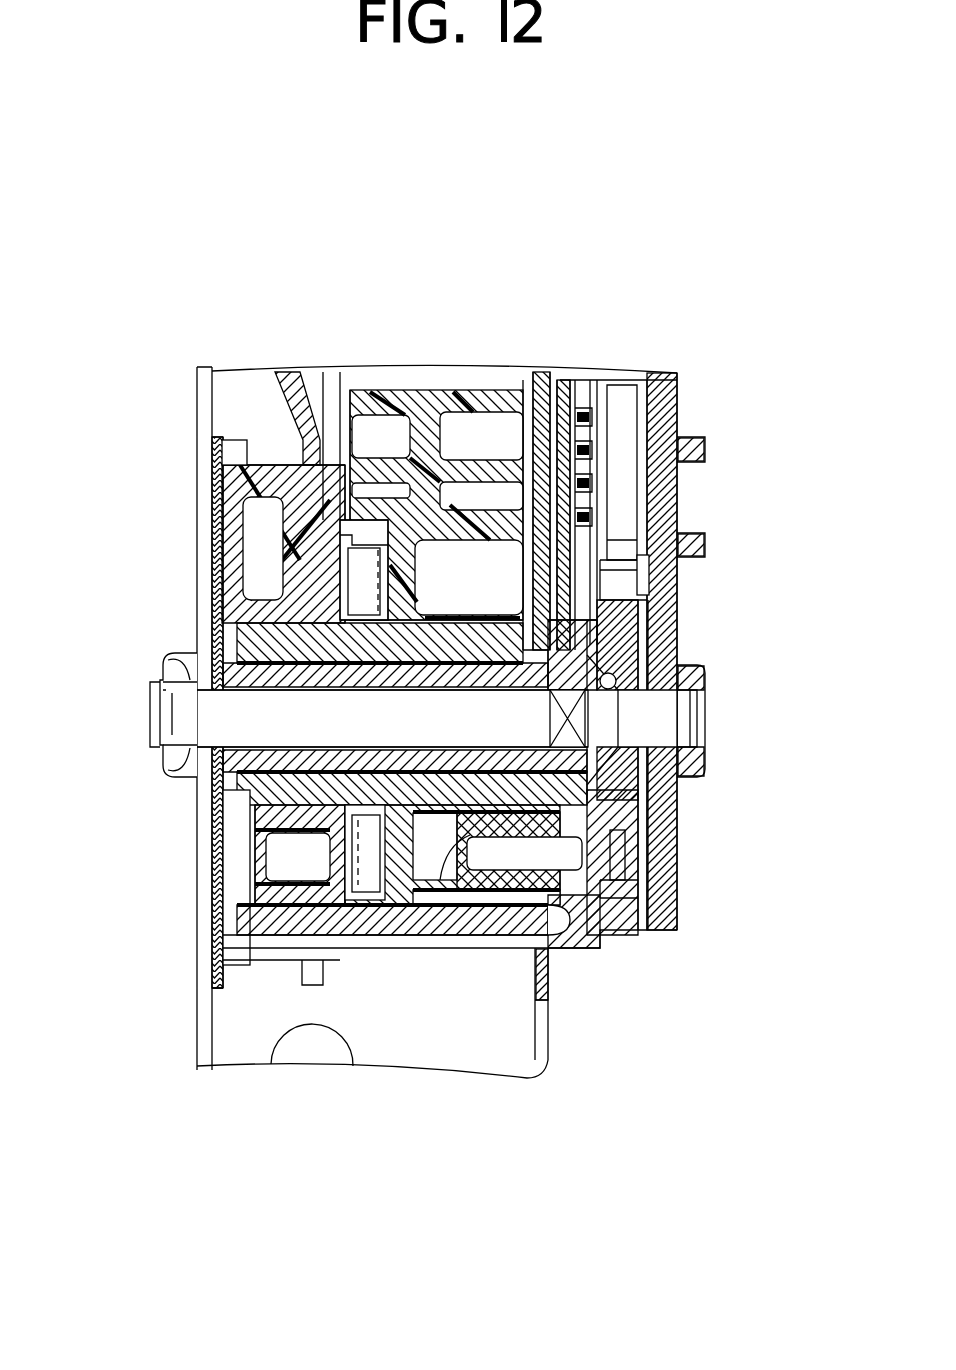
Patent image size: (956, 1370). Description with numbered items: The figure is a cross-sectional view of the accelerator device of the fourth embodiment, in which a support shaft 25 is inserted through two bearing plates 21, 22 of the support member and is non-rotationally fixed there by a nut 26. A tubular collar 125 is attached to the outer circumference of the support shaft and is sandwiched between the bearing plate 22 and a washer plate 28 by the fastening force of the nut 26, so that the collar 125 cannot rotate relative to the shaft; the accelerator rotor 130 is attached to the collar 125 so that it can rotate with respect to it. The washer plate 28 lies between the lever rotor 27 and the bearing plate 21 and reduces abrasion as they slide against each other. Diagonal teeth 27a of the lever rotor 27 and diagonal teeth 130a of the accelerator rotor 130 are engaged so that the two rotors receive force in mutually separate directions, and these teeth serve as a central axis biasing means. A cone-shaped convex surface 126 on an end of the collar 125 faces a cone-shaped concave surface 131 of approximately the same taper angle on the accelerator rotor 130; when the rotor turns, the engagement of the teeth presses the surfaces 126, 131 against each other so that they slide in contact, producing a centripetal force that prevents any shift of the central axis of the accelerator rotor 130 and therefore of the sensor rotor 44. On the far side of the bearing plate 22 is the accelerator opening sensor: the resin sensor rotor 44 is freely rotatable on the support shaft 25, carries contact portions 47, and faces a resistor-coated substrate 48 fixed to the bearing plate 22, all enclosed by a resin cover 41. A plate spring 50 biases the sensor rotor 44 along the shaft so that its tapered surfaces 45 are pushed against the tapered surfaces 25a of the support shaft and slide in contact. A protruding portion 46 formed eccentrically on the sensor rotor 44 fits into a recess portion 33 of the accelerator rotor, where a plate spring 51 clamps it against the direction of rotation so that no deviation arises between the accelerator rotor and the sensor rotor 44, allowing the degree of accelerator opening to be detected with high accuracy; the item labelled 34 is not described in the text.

The bearing plate 21 is at (208, 545).
The bearing plate 22 is at (545, 372).
The support shaft 25 is at (290, 742).
The tapered surfaces 25a is at (630, 637).
The nut 26 is at (175, 660).
The lever rotor 27 is at (240, 958).
The diagonal teeth 27a is at (353, 940).
The washer plate 28 is at (240, 987).
The recess portion 33 is at (450, 880).
The clutch plates 34 is at (367, 402).
The cover 41 is at (660, 393).
The sensor rotor 44 is at (680, 763).
The tapered surfaces 45 is at (620, 700).
The protruding portion 46 is at (530, 960).
The contact portions 47 is at (592, 427).
The substrate 48 is at (585, 366).
The plate spring 50 is at (642, 578).
The plate spring 51 is at (575, 802).
The collar 125 is at (232, 640).
The cone-shaped convex surface 126 is at (500, 625).
The accelerator rotor 130 is at (420, 945).
The diagonal teeth 130a is at (403, 945).
The cone-shaped concave surface 131 is at (643, 625).